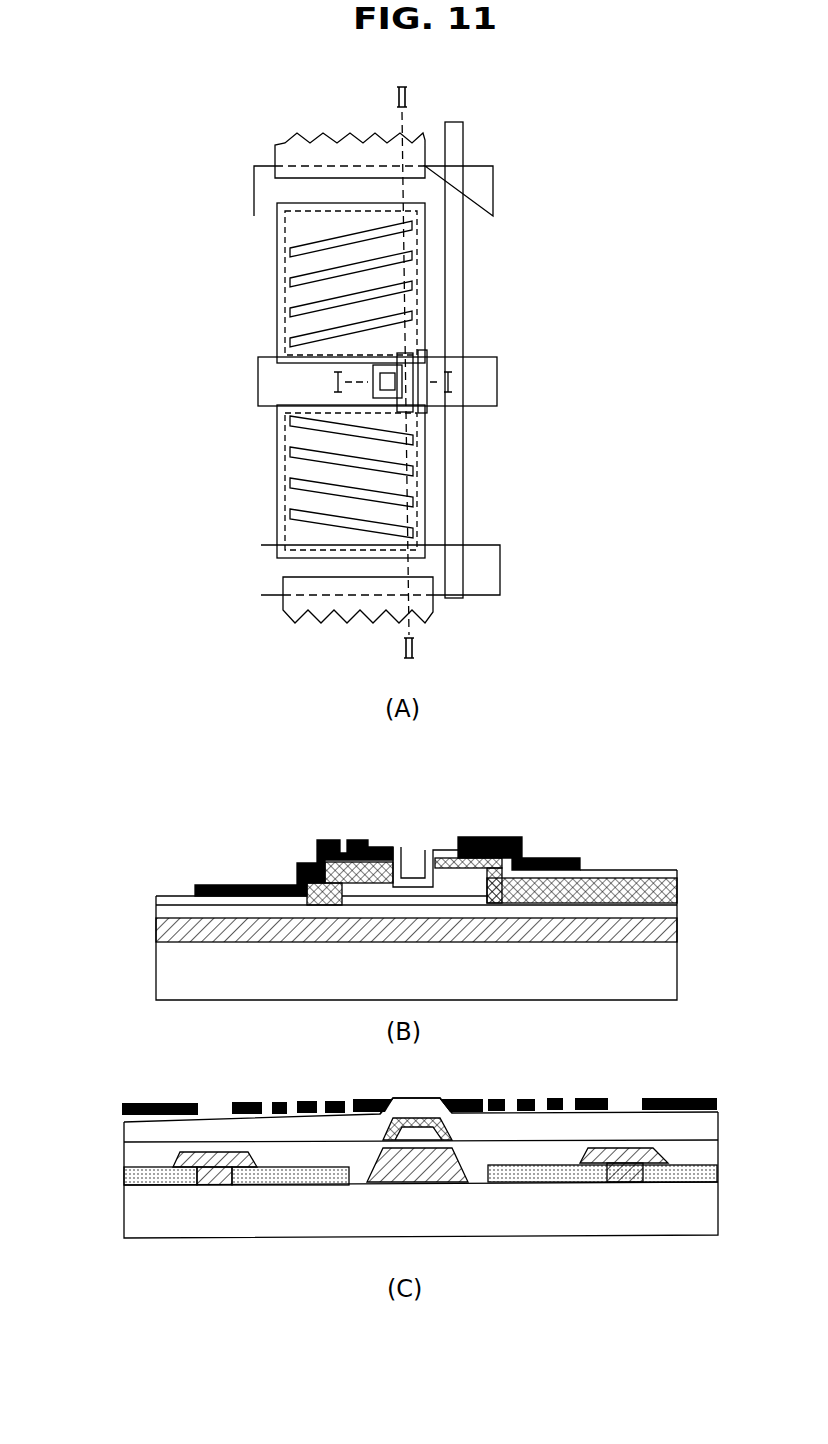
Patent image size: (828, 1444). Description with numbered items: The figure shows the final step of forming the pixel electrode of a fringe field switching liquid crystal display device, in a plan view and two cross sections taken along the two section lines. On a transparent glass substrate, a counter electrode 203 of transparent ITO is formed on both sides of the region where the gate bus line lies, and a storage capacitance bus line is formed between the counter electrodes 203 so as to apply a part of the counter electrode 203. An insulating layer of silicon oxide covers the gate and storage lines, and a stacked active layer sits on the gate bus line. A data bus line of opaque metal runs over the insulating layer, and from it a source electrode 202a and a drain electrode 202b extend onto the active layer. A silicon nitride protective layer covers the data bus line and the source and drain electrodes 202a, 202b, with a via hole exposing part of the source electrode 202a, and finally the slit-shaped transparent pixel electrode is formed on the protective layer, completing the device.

The source electrode 202a is at (400, 850).
The drain electrode 202b is at (519, 837).
The counter electrode 203 is at (125, 1177).